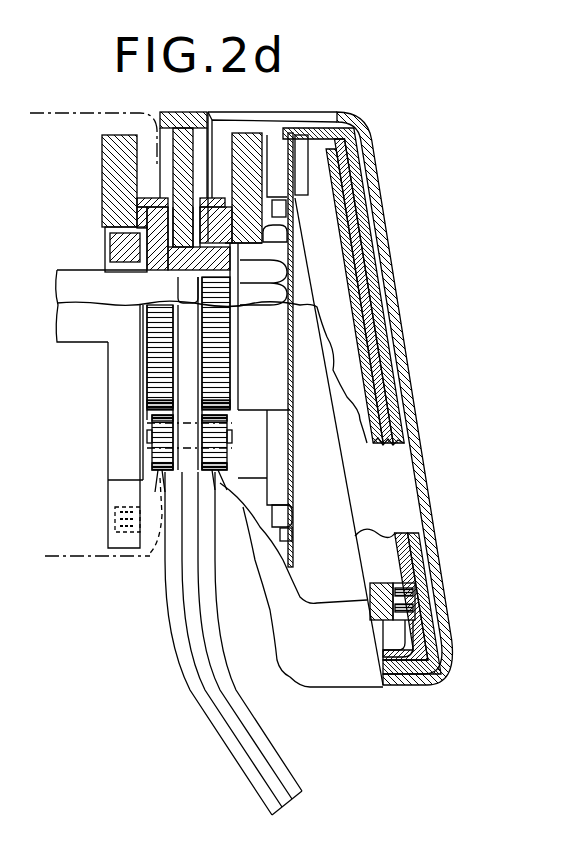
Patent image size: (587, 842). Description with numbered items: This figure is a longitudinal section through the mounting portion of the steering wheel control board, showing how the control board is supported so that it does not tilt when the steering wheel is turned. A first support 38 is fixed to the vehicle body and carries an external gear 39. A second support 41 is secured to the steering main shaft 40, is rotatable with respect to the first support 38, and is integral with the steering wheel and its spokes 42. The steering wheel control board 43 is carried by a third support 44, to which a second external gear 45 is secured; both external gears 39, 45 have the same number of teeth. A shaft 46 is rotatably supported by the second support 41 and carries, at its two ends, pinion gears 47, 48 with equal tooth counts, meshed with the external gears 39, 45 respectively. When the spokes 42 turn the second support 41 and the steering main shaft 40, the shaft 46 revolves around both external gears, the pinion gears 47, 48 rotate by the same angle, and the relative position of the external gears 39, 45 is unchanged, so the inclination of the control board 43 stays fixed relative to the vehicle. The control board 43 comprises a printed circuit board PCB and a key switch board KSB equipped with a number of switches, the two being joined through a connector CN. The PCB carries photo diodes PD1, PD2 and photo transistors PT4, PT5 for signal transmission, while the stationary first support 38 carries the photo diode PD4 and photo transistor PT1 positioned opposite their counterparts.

The first support 38 is at (110, 164).
The external gear 39 is at (152, 362).
The steering main shaft 40 is at (73, 293).
The second support 41 is at (113, 262).
The spokes 42 is at (183, 660).
The steering wheel control board 43 is at (394, 140).
The third support 44 is at (248, 153).
The external gear 45 is at (217, 357).
The shaft 46 is at (147, 434).
The pinion gear 47 is at (155, 491).
The pinion gear 48 is at (220, 475).
The photo transistor PT1 is at (115, 520).
The photo transistor PT4 is at (292, 538).
The photo transistor PT5 is at (286, 208).
The photo diode PD1 is at (272, 517).
The photo diode PD2 is at (278, 244).
The photo diode PD4 is at (145, 532).
The printed circuit board PCB is at (293, 403).
The key switch board KSB is at (368, 290).
The connector CN is at (392, 620).